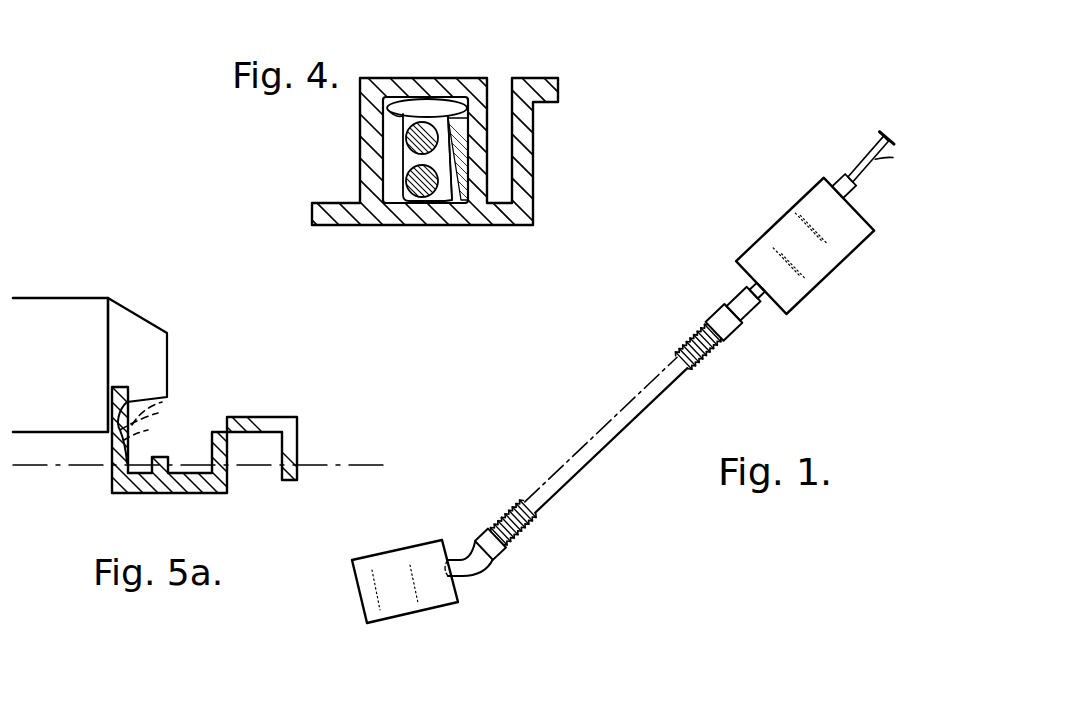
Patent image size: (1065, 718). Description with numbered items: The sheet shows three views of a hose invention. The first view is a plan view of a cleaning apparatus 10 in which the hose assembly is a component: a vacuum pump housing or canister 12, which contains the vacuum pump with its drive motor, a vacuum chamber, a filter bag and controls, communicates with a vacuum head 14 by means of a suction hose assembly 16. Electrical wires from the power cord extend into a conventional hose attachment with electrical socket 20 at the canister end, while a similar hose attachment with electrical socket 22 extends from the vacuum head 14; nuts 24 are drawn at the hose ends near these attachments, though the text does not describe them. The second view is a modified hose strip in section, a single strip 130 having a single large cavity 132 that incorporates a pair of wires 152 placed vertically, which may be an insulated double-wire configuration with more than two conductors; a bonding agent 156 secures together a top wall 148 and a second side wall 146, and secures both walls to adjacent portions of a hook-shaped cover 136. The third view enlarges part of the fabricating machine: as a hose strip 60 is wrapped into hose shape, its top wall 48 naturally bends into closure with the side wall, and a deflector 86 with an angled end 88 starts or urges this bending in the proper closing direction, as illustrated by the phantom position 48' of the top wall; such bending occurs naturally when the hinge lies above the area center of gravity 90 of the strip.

In FIG. 1, the cleaning apparatus 10 is at (650, 312).
In FIG. 1, the canister 12 is at (813, 231).
In FIG. 1, the vacuum head 14 is at (403, 577).
In FIG. 1, the suction hose assembly 16 is at (615, 414).
In FIG. 1, the hose attachment with electrical socket 20 is at (765, 294).
In FIG. 1, the hose attachment with electrical socket 22 is at (475, 553).
In FIG. 1, the nut 24 is at (725, 338).
In FIG. 5a, the top wall 48 is at (175, 401).
In FIG. 5a, the phantom position of top wall 48' is at (183, 405).
In FIG. 5a, the hose strip 60 is at (153, 497).
In FIG. 5a, the deflector 86 is at (88, 341).
In FIG. 5a, the angled end 88 is at (147, 321).
In FIG. 5a, the area center of gravity 90 is at (337, 468).
In FIG. 4, the single strip 130 is at (440, 70).
In FIG. 4, the single large cavity 132 is at (440, 212).
In FIG. 4, the hook-shaped cover 136 is at (470, 84).
In FIG. 4, the second side wall 146 is at (463, 152).
In FIG. 4, the top wall 148 is at (410, 107).
In FIG. 4, the pair of wires 152 is at (413, 180).
In FIG. 4, the bonding agent 156 is at (463, 130).